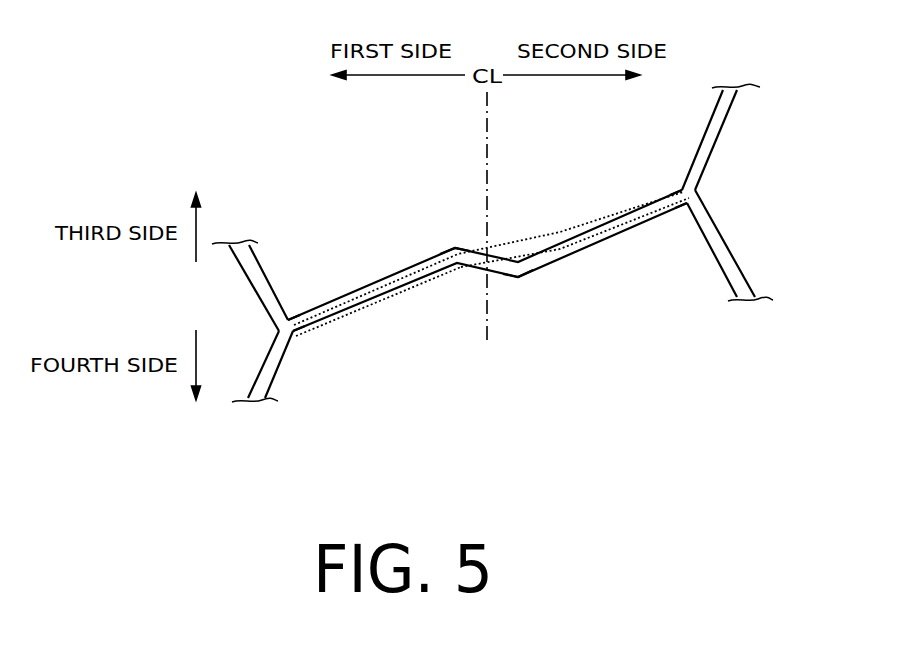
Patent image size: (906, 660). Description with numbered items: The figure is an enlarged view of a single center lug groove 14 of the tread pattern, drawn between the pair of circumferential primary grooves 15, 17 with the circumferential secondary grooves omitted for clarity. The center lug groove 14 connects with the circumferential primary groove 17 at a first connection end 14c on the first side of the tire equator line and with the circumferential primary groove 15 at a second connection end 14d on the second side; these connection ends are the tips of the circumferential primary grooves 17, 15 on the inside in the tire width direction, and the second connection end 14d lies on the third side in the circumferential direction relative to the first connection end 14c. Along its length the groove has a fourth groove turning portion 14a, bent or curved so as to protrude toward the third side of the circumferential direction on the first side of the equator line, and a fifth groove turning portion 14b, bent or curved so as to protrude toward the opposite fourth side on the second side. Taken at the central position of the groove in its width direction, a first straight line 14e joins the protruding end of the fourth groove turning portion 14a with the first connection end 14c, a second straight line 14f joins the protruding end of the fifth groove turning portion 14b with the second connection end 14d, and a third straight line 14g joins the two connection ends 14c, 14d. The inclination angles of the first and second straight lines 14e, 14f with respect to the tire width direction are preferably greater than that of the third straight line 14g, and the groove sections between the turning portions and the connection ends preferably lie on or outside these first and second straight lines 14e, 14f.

The center lug groove 14 is at (390, 284).
The fourth groove turning portion 14a is at (455, 248).
The fifth groove turning portion 14b is at (518, 277).
The first connection end 14c is at (294, 336).
The second connection end 14d is at (682, 191).
The first straight line 14e is at (347, 312).
The second straight line 14f is at (597, 224).
The third straight line 14g is at (407, 292).
The circumferential primary groove 15 is at (718, 262).
The circumferential primary groove 17 is at (272, 375).